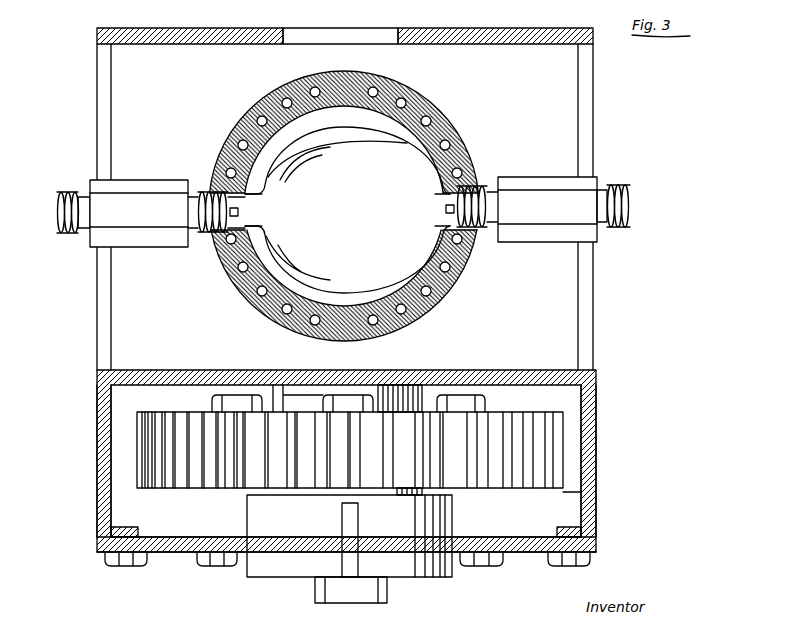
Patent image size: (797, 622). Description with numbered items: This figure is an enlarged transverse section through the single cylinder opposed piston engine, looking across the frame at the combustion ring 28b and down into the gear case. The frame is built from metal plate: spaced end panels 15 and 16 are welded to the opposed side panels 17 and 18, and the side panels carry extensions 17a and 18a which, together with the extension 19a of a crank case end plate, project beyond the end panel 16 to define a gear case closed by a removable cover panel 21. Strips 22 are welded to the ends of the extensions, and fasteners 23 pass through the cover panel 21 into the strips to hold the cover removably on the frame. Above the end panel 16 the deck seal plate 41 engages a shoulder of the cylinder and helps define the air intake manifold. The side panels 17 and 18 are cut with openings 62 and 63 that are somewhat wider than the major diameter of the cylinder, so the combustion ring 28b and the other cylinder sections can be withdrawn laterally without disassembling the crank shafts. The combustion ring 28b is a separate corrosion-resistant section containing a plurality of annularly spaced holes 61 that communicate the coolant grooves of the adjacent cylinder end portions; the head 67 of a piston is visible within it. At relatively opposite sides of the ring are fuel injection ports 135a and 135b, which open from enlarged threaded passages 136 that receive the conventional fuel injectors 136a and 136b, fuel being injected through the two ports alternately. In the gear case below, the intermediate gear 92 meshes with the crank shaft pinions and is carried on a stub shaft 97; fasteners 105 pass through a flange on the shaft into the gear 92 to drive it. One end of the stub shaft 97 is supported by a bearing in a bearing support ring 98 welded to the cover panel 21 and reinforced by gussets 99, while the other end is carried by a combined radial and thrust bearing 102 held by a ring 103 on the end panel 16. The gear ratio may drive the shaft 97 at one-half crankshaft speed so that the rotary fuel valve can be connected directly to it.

The end panel 15 is at (478, 30).
The end panel 16 is at (465, 372).
The side panel 17 is at (102, 379).
The extension 17a is at (102, 478).
The side panel 18 is at (596, 380).
The extension 18a is at (598, 446).
The extension 19a is at (565, 491).
The cover panel 21 is at (162, 553).
The strips 22 is at (586, 529).
The fasteners 23 is at (597, 556).
The combustion ring 28b is at (361, 206).
The deck seal plate 41 is at (545, 125).
The holes 61 is at (428, 120).
The opening 62 is at (98, 270).
The opening 63 is at (586, 303).
The head 67 is at (412, 173).
The intermediate gear 92 is at (534, 412).
The stub shaft 97 is at (382, 590).
The bearing support ring 98 is at (446, 517).
The gussets 99 is at (353, 520).
The combined radial and thrust bearing 102 is at (285, 400).
The ring 103 is at (392, 388).
The fasteners 105 is at (480, 399).
The fuel injection port 135a is at (246, 208).
The fuel injection port 135b is at (450, 209).
The enlarged passages 136 is at (216, 242).
The fuel injector 136a is at (124, 190).
The fuel injector 136b is at (525, 185).